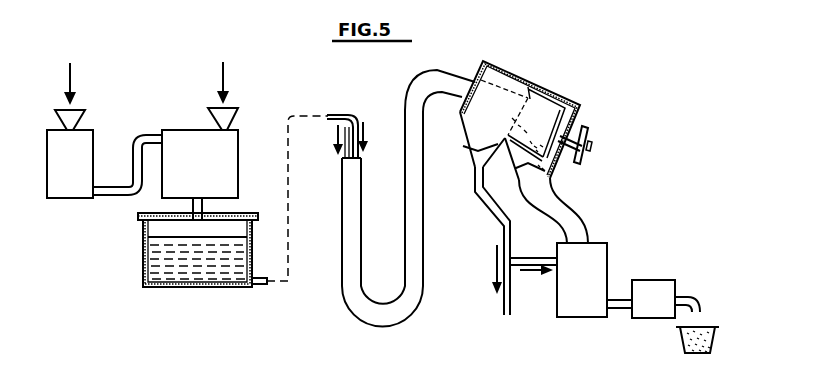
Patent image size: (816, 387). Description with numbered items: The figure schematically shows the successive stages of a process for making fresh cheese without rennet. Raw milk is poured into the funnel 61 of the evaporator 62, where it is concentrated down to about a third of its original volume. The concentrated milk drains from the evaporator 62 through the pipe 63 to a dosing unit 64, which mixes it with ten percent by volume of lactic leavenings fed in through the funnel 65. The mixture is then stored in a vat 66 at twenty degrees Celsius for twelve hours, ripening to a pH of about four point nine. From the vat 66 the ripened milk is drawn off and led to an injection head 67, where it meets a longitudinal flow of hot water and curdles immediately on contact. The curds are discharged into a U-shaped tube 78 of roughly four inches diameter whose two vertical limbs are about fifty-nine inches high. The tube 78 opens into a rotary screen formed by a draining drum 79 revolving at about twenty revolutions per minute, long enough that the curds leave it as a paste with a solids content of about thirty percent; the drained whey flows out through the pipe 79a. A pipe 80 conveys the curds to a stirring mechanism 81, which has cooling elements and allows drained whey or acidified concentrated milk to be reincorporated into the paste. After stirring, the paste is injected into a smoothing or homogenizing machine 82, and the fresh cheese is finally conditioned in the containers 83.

The funnel 61 is at (75, 125).
The evaporator 62 is at (70, 165).
The pipe 63 is at (113, 192).
The dosing unit 64 is at (203, 165).
The funnel 65 is at (227, 118).
The vat 66 is at (145, 260).
The injection head 67 is at (368, 173).
The tube 78 is at (355, 297).
The draining drum 79 is at (524, 78).
The pipe 79a is at (504, 230).
The pipe 80 is at (548, 208).
The stirring mechanism 81 is at (587, 270).
The homogenizing machine 82 is at (650, 297).
The containers 83 is at (682, 345).